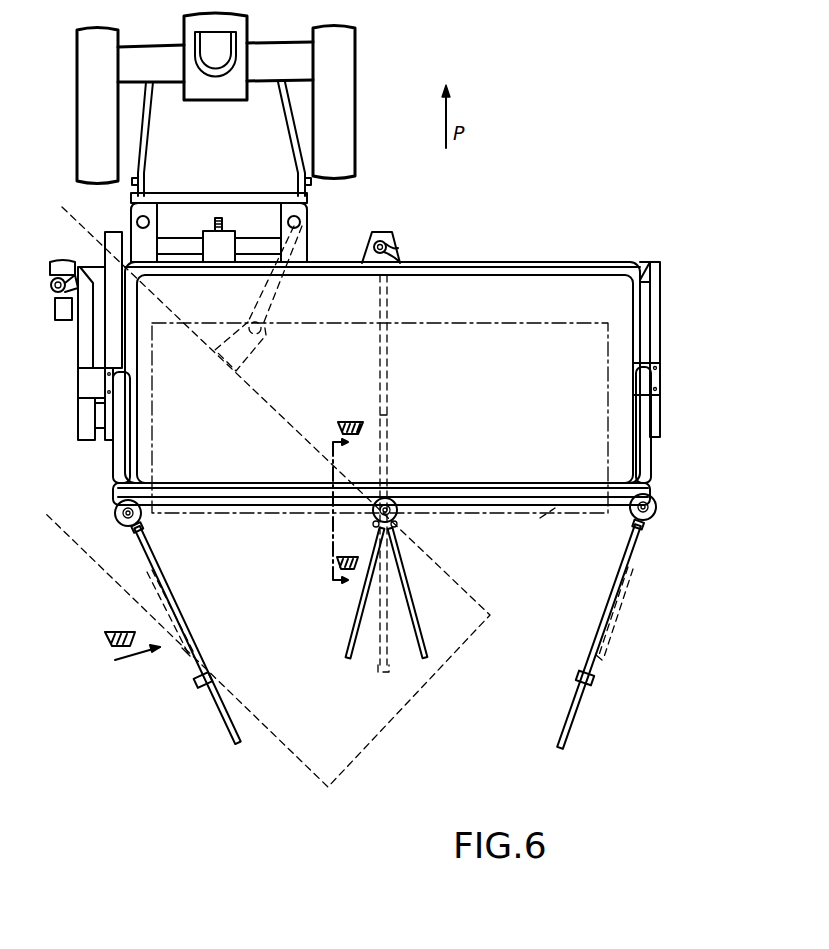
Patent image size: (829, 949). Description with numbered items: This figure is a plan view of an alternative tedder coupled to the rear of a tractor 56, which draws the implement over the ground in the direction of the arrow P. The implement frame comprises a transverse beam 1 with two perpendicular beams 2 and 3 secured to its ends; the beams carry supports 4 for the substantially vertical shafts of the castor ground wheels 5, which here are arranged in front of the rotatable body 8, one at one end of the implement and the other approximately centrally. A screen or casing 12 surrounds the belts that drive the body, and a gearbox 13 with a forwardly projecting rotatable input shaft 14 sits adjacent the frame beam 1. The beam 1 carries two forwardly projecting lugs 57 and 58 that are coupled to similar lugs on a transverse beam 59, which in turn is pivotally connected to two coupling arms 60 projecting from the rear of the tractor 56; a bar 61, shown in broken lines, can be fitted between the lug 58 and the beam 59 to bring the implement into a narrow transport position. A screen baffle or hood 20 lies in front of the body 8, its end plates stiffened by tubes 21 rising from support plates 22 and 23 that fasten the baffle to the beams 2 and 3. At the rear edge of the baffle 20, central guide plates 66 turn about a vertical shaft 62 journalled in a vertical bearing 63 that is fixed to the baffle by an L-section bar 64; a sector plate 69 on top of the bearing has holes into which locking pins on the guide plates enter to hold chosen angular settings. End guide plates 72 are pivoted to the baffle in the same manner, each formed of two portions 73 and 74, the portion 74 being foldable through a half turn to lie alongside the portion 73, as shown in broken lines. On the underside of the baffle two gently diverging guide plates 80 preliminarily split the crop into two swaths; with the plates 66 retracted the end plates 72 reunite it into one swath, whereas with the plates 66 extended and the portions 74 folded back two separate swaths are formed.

The beam 1 is at (382, 358).
The beam 2 is at (80, 346).
The beam 3 is at (659, 303).
The support 4 is at (66, 276).
The castor ground wheel 5 is at (60, 270).
The body 8 is at (546, 514).
The screen or casing 12 is at (115, 232).
The gearbox 13 is at (233, 240).
The input shaft 14 is at (226, 220).
The baffle 20 is at (557, 272).
The tube 21 is at (651, 458).
The support plate 22 is at (660, 370).
The support plate 23 is at (82, 384).
The tractor 56 is at (276, 43).
The lug 57 is at (150, 222).
The lug 58 is at (306, 228).
The transverse beam 59 is at (252, 197).
The coupling arm 60 is at (141, 150).
The bar 61 is at (268, 291).
The vertical shaft 62 is at (115, 514).
The vertical bearing 63 is at (133, 530).
The bar 64 is at (521, 486).
The central guide plate 66 is at (356, 606).
The sector plate 69 is at (398, 522).
The guide plate 72 is at (612, 594).
The portion 73 is at (150, 562).
The portion 74 is at (150, 580).
The guide plate 80 is at (388, 415).